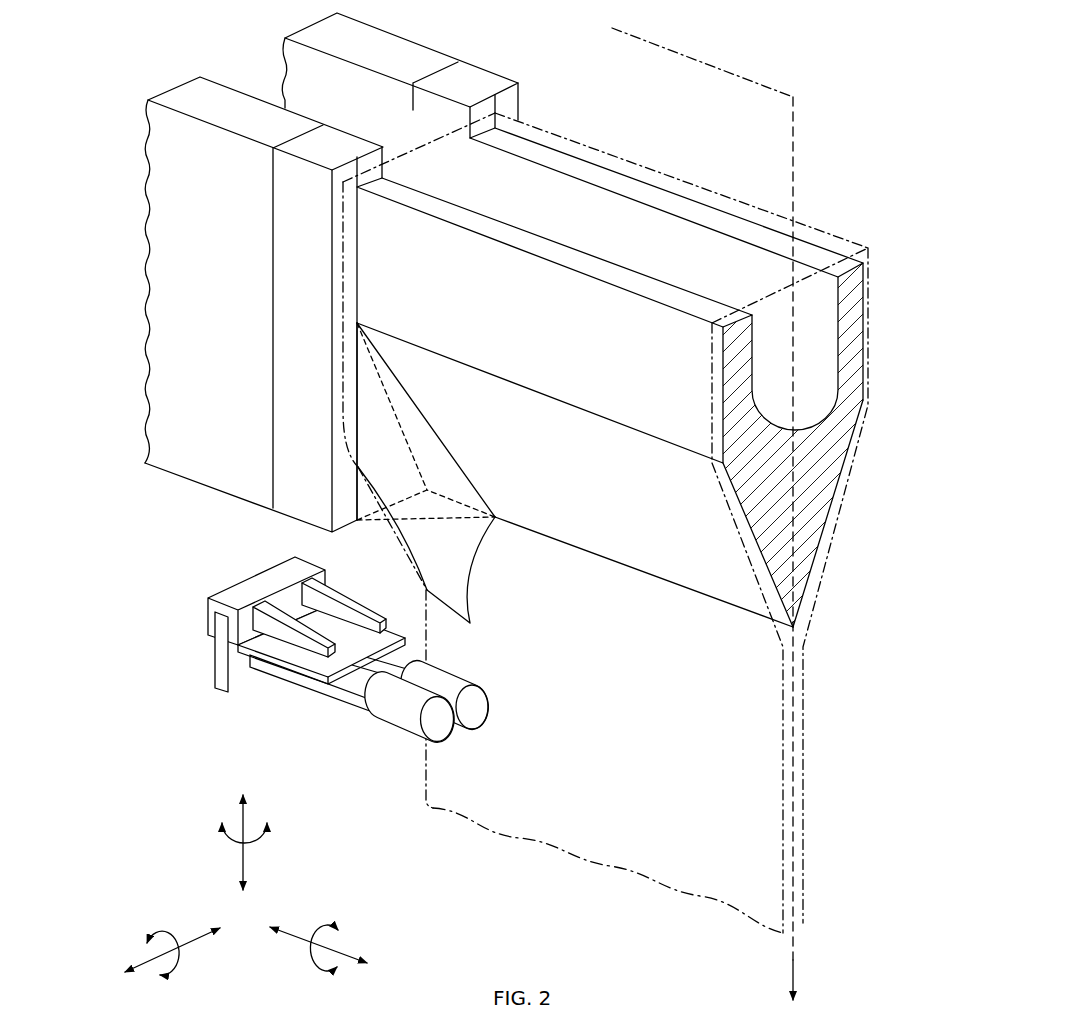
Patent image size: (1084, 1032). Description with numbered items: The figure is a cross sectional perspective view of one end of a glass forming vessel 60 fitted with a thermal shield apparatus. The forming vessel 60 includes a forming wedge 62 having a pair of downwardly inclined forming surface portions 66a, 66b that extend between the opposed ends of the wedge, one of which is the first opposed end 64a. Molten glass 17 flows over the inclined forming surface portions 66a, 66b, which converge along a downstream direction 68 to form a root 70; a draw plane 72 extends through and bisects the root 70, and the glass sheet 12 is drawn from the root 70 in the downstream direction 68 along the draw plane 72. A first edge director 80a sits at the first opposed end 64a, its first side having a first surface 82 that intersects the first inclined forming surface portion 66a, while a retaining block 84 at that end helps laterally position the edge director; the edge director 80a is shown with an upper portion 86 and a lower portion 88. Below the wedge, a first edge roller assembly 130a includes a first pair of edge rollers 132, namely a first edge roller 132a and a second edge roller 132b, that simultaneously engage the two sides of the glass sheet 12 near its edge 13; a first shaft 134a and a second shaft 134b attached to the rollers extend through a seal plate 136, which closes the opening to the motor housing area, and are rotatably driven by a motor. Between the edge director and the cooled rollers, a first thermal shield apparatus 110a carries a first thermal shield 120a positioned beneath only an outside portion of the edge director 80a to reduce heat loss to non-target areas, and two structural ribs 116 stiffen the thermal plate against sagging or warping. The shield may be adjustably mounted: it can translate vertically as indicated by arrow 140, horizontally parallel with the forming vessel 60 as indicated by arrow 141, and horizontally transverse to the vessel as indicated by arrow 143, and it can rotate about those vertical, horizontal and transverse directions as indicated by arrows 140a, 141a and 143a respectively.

The glass sheet 12 is at (673, 892).
The edge of the glass sheet 13 is at (422, 612).
The molten glass 17 is at (690, 233).
The forming vessel 60 is at (842, 187).
The forming wedge 62 is at (720, 348).
The first opposed end of the forming wedge 64a is at (368, 257).
The first downwardly inclined forming surface portion 66a is at (740, 515).
The second downwardly inclined forming surface portion 66b is at (822, 548).
The downstream direction 68 is at (797, 967).
The root 70 is at (722, 603).
The draw plane 72 is at (797, 127).
The first edge director 80a is at (436, 459).
The first surface 82 is at (420, 445).
The retaining block 84 is at (170, 448).
The upper portion 86 is at (463, 487).
The lower portion 88 is at (450, 553).
The first thermal shield apparatus 110a is at (256, 639).
The structural rib 116 is at (275, 633).
The first thermal shield 120a is at (272, 689).
The first edge roller assembly 130a is at (406, 716).
The first pair of edge rollers 132 is at (464, 727).
The first edge roller 132a is at (363, 728).
The second edge roller 132b is at (490, 692).
The first shaft 134a is at (327, 688).
The second shaft 134b is at (402, 663).
The seal plate 136 is at (205, 672).
The arrow indicating vertical directions 140 is at (243, 858).
The arrow indicating rotation about the vertical direction 140a is at (220, 827).
The arrow indicating horizontal directions parallel with the forming vessel 141 is at (297, 940).
The arrow indicating rotation about the horizontal direction 141a is at (340, 930).
The arrow indicating horizontal directions transverse with the forming vessel 143 is at (198, 948).
The arrow indicating rotation about the transverse direction 143a is at (158, 930).